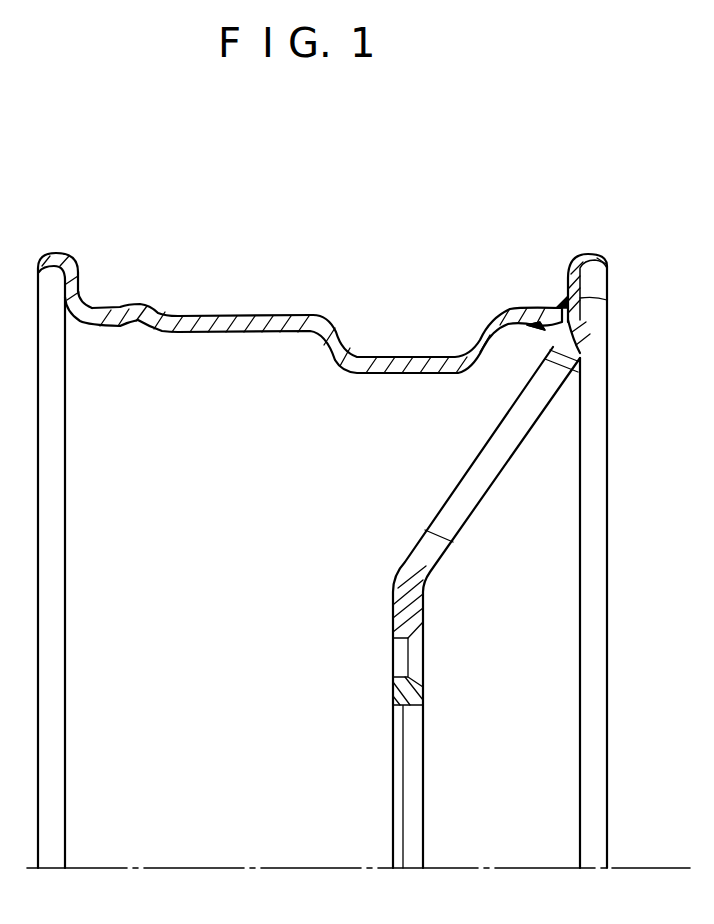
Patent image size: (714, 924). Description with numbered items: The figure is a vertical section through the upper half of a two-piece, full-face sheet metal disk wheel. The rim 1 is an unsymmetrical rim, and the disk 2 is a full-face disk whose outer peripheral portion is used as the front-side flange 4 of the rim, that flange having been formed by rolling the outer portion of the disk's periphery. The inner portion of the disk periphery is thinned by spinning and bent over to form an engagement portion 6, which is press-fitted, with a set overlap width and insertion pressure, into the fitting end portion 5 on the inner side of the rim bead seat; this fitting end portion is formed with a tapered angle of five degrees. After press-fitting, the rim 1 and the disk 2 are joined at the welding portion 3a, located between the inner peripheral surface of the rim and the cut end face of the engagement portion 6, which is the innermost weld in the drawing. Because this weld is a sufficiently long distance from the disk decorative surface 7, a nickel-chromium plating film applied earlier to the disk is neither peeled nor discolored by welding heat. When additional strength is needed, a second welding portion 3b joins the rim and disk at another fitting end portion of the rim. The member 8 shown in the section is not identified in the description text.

The disc 1 is at (258, 326).
The hub 2 is at (417, 556).
The weld 3a is at (538, 327).
The weld 3b is at (563, 300).
The rim flange 4 is at (600, 262).
The disc outer peripheral portion 5 is at (558, 308).
The rim 6 is at (582, 345).
The bead seat 7 is at (607, 302).
The reinforcing member 8 is at (508, 443).